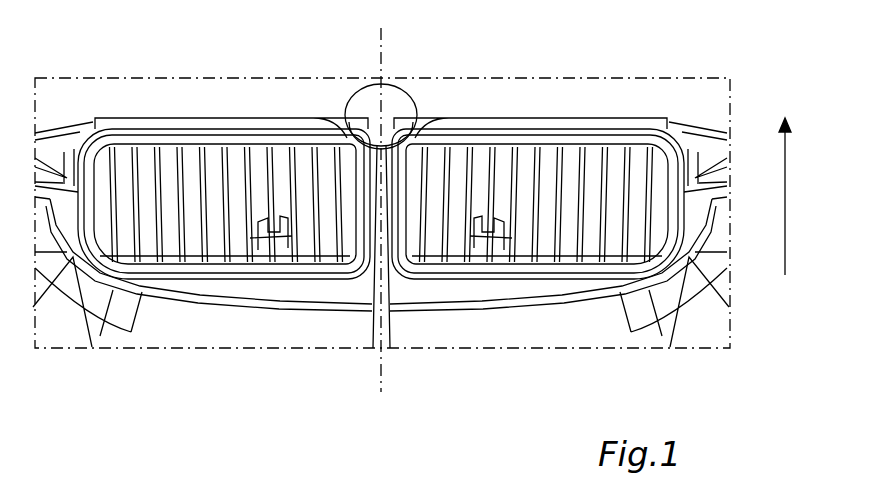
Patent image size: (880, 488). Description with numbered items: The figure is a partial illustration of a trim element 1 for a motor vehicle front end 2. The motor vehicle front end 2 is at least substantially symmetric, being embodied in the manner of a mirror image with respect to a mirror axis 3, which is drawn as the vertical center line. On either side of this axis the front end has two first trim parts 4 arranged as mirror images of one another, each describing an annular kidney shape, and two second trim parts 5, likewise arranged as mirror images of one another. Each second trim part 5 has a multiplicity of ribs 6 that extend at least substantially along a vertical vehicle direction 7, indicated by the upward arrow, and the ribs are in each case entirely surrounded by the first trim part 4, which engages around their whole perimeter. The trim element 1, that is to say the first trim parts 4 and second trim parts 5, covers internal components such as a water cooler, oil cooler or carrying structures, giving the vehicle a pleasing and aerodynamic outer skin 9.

The trim element 1 is at (175, 321).
The motor vehicle front end 2 is at (353, 363).
The mirror axis 3 is at (381, 45).
The first trim part 4 is at (229, 131).
The second trim part 5 is at (250, 178).
The rib 6 is at (168, 168).
The vertical vehicle direction 7 is at (786, 204).
The outer skin 9 is at (447, 111).